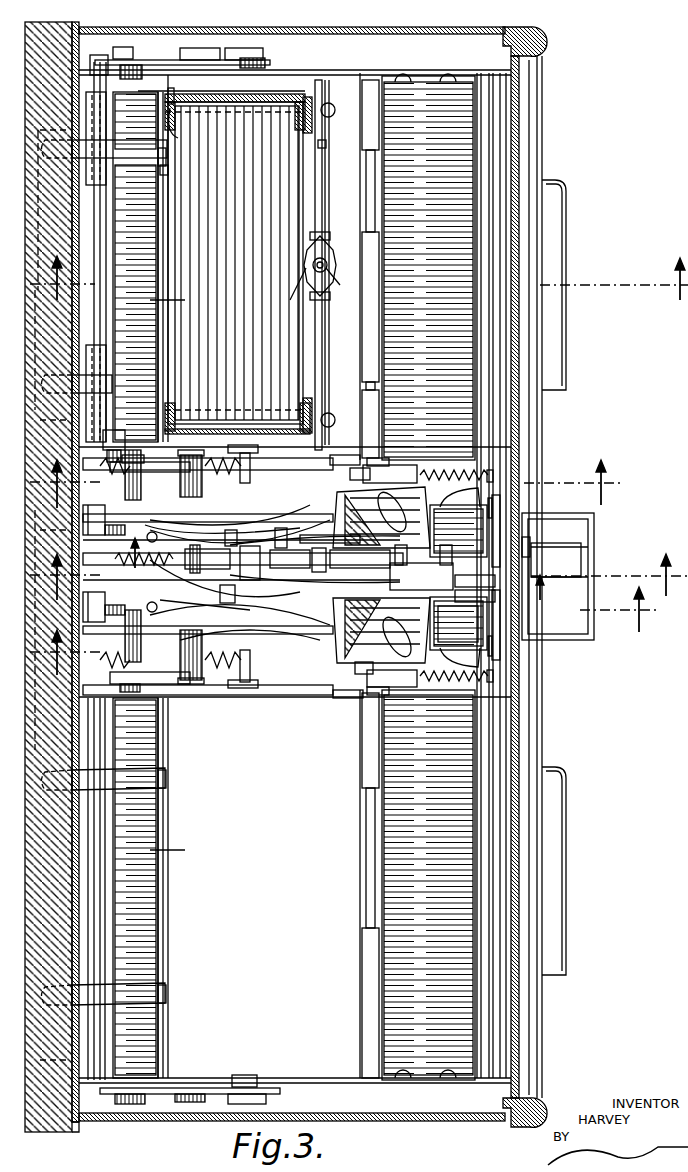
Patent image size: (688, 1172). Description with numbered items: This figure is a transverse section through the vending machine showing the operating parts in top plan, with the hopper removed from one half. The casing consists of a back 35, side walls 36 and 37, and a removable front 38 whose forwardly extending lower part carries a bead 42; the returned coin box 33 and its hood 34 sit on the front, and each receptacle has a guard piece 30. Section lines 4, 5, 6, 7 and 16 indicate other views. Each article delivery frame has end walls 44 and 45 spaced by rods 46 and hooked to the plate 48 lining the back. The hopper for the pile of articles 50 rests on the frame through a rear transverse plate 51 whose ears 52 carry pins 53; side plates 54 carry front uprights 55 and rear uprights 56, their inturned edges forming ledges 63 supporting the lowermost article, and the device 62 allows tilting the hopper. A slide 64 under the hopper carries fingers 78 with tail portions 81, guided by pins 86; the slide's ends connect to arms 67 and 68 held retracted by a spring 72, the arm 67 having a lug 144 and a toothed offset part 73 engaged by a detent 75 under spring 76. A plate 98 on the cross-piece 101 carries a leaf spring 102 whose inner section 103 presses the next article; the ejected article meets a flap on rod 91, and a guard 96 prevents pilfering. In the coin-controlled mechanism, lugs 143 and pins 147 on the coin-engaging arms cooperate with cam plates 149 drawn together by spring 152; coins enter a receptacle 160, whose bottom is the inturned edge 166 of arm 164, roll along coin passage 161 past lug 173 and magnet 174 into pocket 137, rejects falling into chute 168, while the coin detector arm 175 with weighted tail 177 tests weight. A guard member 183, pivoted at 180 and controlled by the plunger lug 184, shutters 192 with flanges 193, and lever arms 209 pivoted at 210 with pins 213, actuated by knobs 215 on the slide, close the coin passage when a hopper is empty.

The back 35 is at (75, 50).
The side wall 37 is at (455, 35).
The side wall 36 is at (298, 1112).
The bead 42 is at (545, 45).
The removable front 38 is at (520, 706).
The rods 46 is at (490, 143).
The end wall 45 is at (368, 78).
The guard piece 30 is at (556, 236).
The section line 7— 7 is at (359, 278).
The section line 6— 6 is at (329, 484).
The section line 5— 5 is at (359, 577).
The section line 4— 4 is at (350, 631).
The section line 16— 16 is at (341, 568).
The device 62 is at (103, 62).
The pins 53 is at (142, 66).
The arm 68 is at (215, 62).
The side plates 54 is at (288, 92).
The articles 50 is at (235, 263).
The ledges 63 is at (258, 122).
The rear uprights 56 is at (165, 112).
The front uprights 55 is at (312, 128).
The cross-piece 101 is at (322, 176).
The plate 98 is at (326, 234).
The leaf spring 102 is at (330, 280).
The inner section 103 is at (312, 275).
The rod 91 is at (366, 197).
The guard 96 is at (428, 577).
The fingers 78 is at (162, 220).
The rear transversely arranged plate 51 is at (98, 216).
The plate 48 is at (160, 315).
The ears 52 is at (108, 445).
The tail portion 81 is at (152, 160).
The pins 86 is at (166, 165).
The slide 64 is at (160, 305).
The arm 67 is at (290, 460).
The lugs 143 is at (140, 551).
The lug 144 is at (193, 460).
The spring 72 is at (232, 460).
The pins 147 is at (245, 508).
The weighted tail portion 177 is at (285, 525).
The arm 175 is at (258, 548).
The cam plate 149 is at (300, 540).
The pin 213 is at (292, 537).
The pivot 210 is at (98, 563).
The spring 152 is at (138, 570).
The guard member 183 is at (243, 561).
The magnet 174 is at (290, 756).
The lug 184 is at (360, 569).
The coin passage 161 is at (307, 710).
The pivot 180 is at (235, 598).
The coin pocket 137 is at (265, 640).
The knob 215 is at (130, 685).
The lever arm 209 is at (185, 692).
The offset part 73 is at (350, 490).
The out-turned lug 173 is at (381, 630).
The hopper shaped receptacle 160 is at (470, 520).
The arm 164 is at (480, 492).
The inturned lower edge 166 is at (458, 624).
The shutter 192 is at (500, 530).
The flange 193 is at (500, 586).
The box 33 is at (594, 518).
The hood 34 is at (582, 556).
The detent 75 is at (392, 466).
The spring 76 is at (432, 472).
The chute 168 is at (365, 470).
The end wall 44 is at (346, 700).